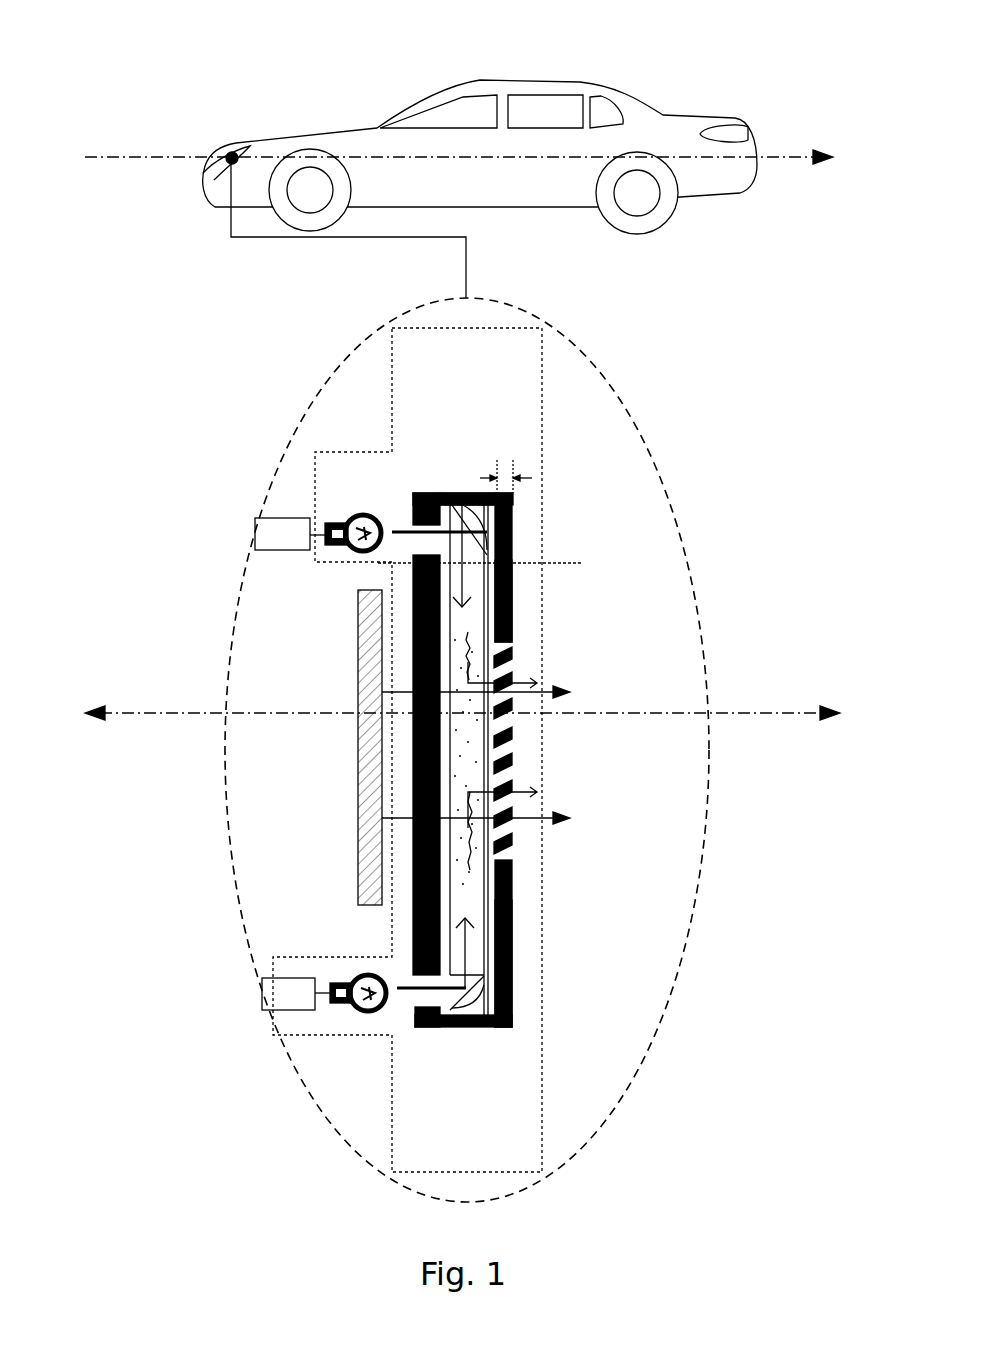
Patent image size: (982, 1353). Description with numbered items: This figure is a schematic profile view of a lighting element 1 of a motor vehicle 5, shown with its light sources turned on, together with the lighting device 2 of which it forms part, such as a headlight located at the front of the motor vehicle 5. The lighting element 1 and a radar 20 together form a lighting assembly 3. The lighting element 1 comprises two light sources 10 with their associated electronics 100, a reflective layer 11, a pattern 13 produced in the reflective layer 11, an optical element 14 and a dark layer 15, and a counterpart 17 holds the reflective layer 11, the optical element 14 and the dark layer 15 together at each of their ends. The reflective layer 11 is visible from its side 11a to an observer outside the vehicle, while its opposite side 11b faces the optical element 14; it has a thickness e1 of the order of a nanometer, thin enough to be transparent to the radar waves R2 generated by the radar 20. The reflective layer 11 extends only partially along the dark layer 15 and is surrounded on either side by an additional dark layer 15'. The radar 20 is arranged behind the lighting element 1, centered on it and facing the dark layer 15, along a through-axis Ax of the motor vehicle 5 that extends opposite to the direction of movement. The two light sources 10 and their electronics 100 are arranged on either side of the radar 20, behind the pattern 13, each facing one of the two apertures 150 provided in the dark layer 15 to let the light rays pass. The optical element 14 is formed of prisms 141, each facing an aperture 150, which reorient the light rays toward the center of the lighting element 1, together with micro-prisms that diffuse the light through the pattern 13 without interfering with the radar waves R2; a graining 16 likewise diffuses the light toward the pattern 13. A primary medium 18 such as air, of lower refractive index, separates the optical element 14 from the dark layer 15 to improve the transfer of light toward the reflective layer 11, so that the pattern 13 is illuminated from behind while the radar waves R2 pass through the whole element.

The lighting element 1 is at (542, 460).
The lighting device 2 is at (229, 153).
The lighting assembly 3 is at (517, 302).
The motor vehicle 5 is at (340, 90).
The light source 10 is at (359, 516).
The reflective layer 11 is at (512, 834).
The side of the reflective layer 11a is at (503, 563).
The side of the reflective layer 11b is at (353, 575).
The pattern 13 is at (507, 750).
The optical element 14 is at (485, 735).
The dark layer 15 is at (356, 765).
The additional dark layer 15' is at (523, 521).
The graining 16 is at (512, 955).
The counterpart 17 is at (453, 507).
The primary medium 18 is at (512, 588).
The radar 20 is at (358, 660).
The associated electronics 100 is at (292, 764).
The prisms 141 is at (462, 500).
The apertures 150 is at (413, 529).
The through-axis Ax is at (462, 424).
The radar waves R2 is at (492, 754).
The thickness e1 is at (506, 468).